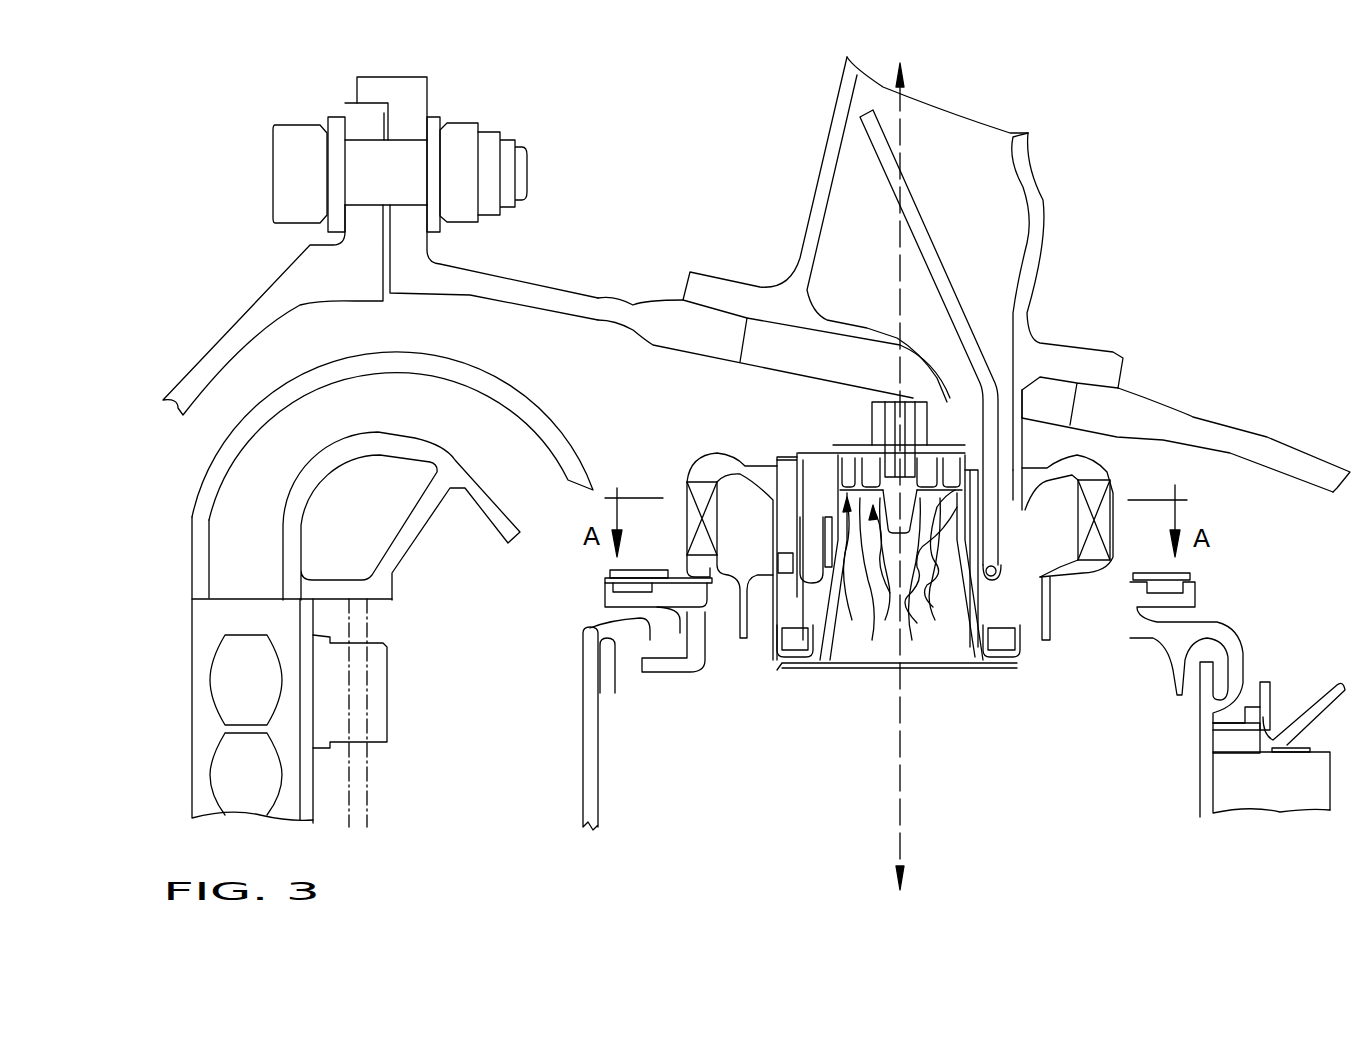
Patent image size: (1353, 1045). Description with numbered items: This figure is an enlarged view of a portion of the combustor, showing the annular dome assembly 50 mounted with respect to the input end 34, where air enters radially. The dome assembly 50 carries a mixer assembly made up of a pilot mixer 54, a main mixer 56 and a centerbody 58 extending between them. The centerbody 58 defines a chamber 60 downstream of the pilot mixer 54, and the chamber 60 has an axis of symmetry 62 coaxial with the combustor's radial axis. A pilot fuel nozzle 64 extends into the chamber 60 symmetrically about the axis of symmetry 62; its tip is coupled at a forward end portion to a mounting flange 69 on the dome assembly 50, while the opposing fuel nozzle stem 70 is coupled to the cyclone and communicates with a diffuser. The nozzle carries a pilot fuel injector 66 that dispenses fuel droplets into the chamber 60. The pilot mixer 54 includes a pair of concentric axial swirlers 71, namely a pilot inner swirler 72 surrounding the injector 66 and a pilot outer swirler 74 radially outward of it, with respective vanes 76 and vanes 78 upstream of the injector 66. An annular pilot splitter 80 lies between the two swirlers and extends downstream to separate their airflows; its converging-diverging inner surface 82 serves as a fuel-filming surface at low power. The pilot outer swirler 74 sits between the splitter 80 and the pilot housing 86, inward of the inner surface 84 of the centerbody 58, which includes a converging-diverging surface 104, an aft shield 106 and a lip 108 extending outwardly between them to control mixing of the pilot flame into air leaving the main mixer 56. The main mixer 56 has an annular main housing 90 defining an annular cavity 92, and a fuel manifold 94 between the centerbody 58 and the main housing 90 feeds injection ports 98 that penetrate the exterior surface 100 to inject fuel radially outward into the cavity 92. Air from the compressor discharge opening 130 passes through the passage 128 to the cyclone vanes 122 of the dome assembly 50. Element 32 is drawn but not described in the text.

The combustor liner 32 is at (598, 790).
The input end 34 is at (563, 673).
The dome assembly 50 is at (1175, 434).
The pilot mixer 54 is at (972, 737).
The main mixer 56 is at (1033, 650).
The centerbody 58 is at (813, 670).
The chamber 60 is at (942, 666).
The axis of symmetry 62 is at (900, 845).
The pilot fuel nozzle 64 is at (865, 402).
The pilot fuel injector 66 is at (862, 620).
The mounting flange 69 is at (940, 402).
The fuel nozzle stem 70 is at (870, 452).
The swirlers 71 is at (842, 445).
The pilot inner swirler 72 is at (865, 558).
The pilot outer swirler 74 is at (872, 574).
The vanes 76 is at (920, 402).
The vanes 78 is at (1059, 401).
The pilot splitter 80 is at (945, 558).
The converging-diverging inner surface 82 is at (931, 575).
The inner surface 84 is at (837, 668).
The pilot housing 86 is at (777, 670).
The main housing 90 is at (713, 625).
The annular cavity 92 is at (763, 547).
The fuel manifold 94 is at (1000, 523).
The injection ports 98 is at (1047, 577).
The exterior surface 100 is at (1060, 620).
The converging-diverging surface 104 is at (970, 663).
The aft shield 106 is at (998, 663).
The lip 108 is at (965, 668).
The cyclone vanes 122 is at (700, 480).
The passage 128 is at (653, 477).
The compressor discharge opening 130 is at (1003, 360).